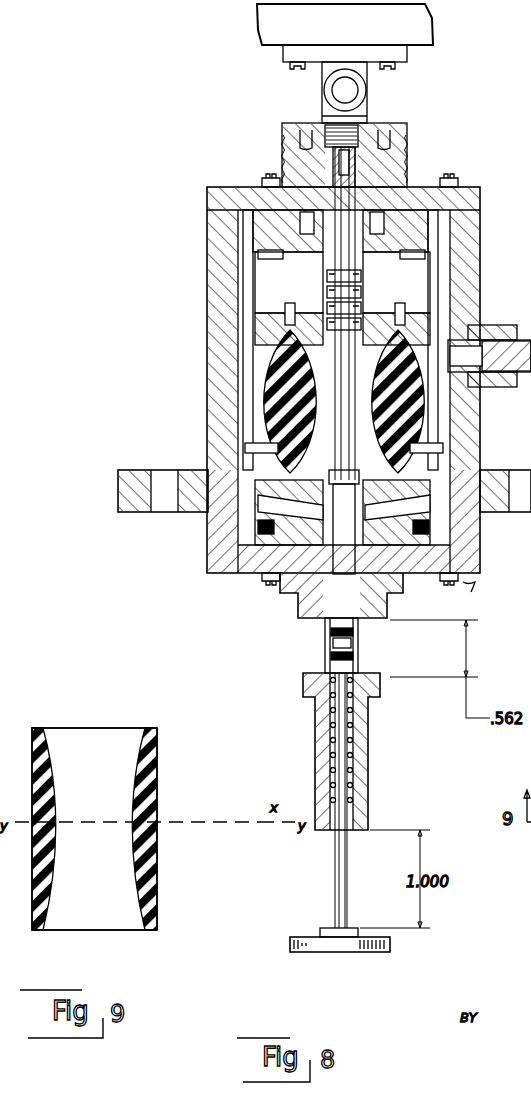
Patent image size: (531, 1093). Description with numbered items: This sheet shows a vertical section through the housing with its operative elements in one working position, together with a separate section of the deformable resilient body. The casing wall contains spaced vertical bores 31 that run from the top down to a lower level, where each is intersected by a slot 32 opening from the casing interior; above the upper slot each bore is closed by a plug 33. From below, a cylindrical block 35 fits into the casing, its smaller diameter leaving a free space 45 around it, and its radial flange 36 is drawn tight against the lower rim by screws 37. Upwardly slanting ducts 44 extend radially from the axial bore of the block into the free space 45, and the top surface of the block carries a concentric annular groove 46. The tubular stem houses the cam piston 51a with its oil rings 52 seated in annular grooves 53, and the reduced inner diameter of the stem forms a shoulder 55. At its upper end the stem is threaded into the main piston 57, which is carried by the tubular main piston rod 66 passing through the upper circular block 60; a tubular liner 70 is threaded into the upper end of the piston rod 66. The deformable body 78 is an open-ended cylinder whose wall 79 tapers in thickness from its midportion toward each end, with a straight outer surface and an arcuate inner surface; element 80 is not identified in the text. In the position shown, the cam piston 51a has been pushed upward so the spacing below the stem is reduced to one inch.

In FIG. 8, the vertical bores 31 is at (440, 290).
In FIG. 8, the slot 32 is at (440, 448).
In FIG. 8, the plug 33 is at (450, 230).
In FIG. 8, the cylindrical block 35 is at (277, 528).
In FIG. 8, the flange 36 is at (474, 560).
In FIG. 8, the screws 37 is at (463, 583).
In FIG. 8, the upwardly slanting ducts 44 is at (403, 508).
In FIG. 8, the free space 45 is at (423, 483).
In FIG. 8, the concentric annular groove 46 is at (262, 470).
In FIG. 8, the cam piston 51a is at (348, 645).
In FIG. 8, the oil rings 52 is at (330, 632).
In FIG. 8, the annular grooves 53 is at (330, 657).
In FIG. 8, the shoulder 55 is at (366, 530).
In FIG. 8, the main piston 57 is at (268, 322).
In FIG. 8, the circular block 60 is at (402, 210).
In FIG. 8, the main piston rod 66 is at (362, 274).
In FIG. 8, the tubular liner 70 is at (330, 163).
In FIG. 9, the deformable body 78 is at (162, 876).
In FIG. 9, the wall 79 is at (146, 804).
In FIG. 9, the lens element 80 is at (150, 736).